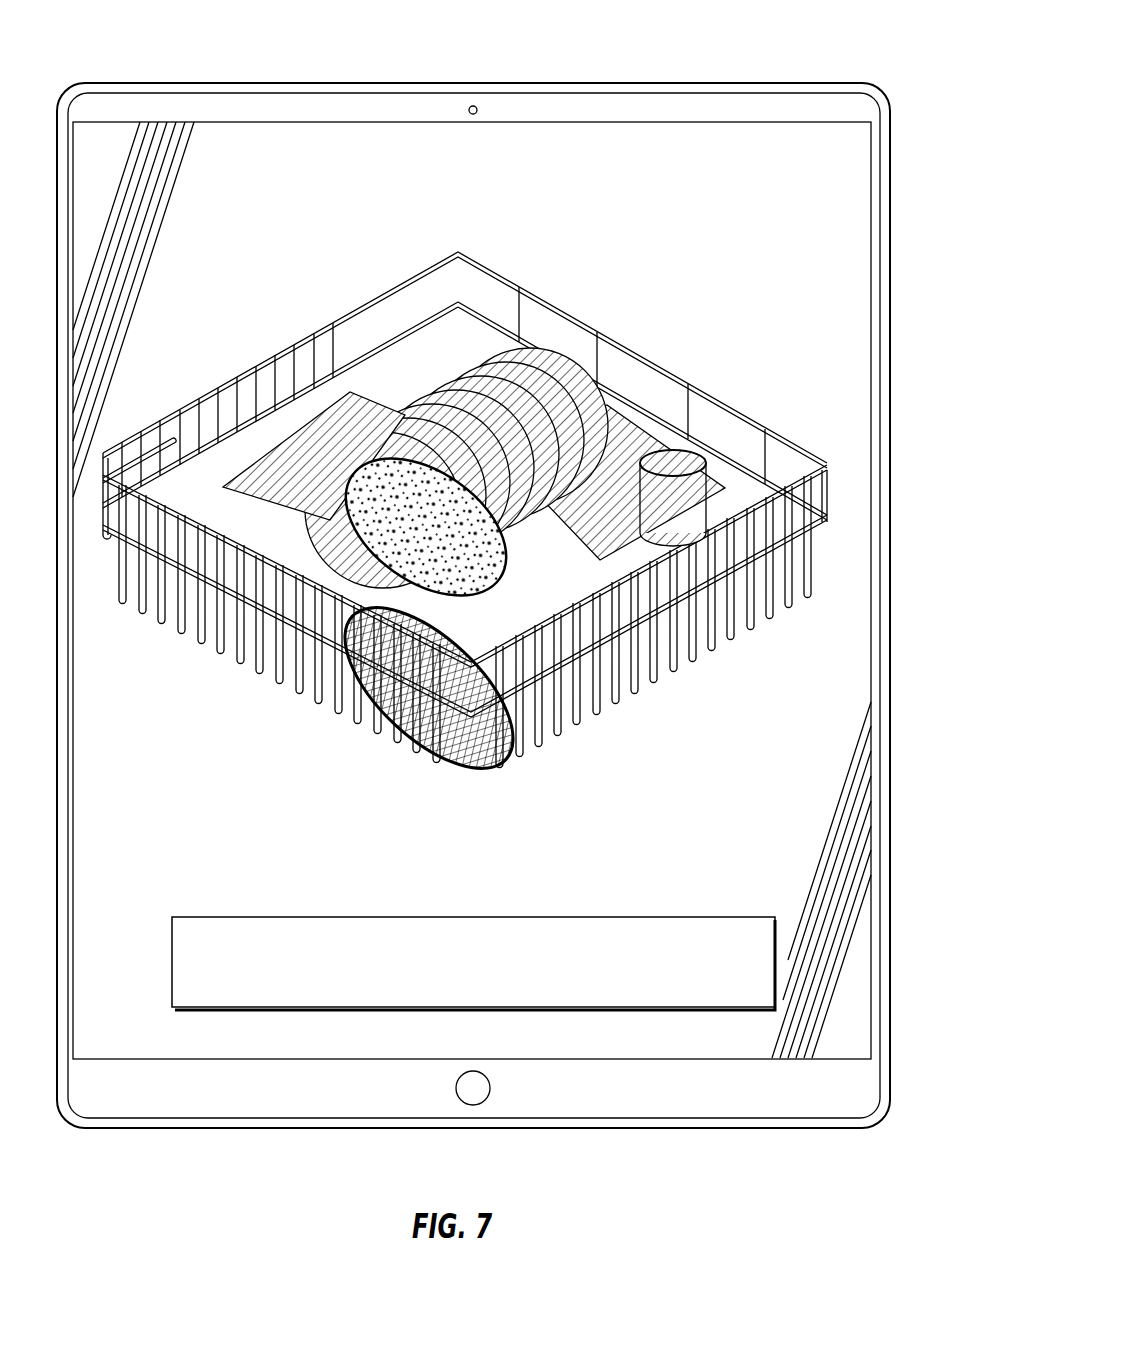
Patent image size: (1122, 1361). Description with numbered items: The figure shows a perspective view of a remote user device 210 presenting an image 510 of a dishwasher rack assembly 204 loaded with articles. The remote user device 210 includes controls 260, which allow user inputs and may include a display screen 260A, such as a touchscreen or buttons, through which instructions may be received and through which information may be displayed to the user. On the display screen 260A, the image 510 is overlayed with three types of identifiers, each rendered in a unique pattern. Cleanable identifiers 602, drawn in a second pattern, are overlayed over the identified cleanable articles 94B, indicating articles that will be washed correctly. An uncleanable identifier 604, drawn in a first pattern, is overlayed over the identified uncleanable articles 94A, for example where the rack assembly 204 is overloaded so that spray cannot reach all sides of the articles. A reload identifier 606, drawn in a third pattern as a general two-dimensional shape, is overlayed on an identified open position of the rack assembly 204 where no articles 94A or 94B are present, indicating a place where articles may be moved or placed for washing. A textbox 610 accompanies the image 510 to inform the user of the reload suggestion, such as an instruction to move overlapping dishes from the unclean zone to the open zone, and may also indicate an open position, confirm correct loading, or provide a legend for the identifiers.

The remote user device 210 is at (160, 1130).
The image 510 is at (777, 200).
The controls 260 is at (490, 1092).
The display screen 260A is at (799, 1060).
The rack assembly 204 is at (650, 690).
The cleanable identifiers 602 is at (380, 407).
The uncleanable articles 94A is at (305, 585).
The cleanable articles 94B is at (545, 355).
The uncleanable identifier 604 is at (370, 593).
The reload identifier 606 is at (425, 755).
The textbox 610 is at (238, 917).